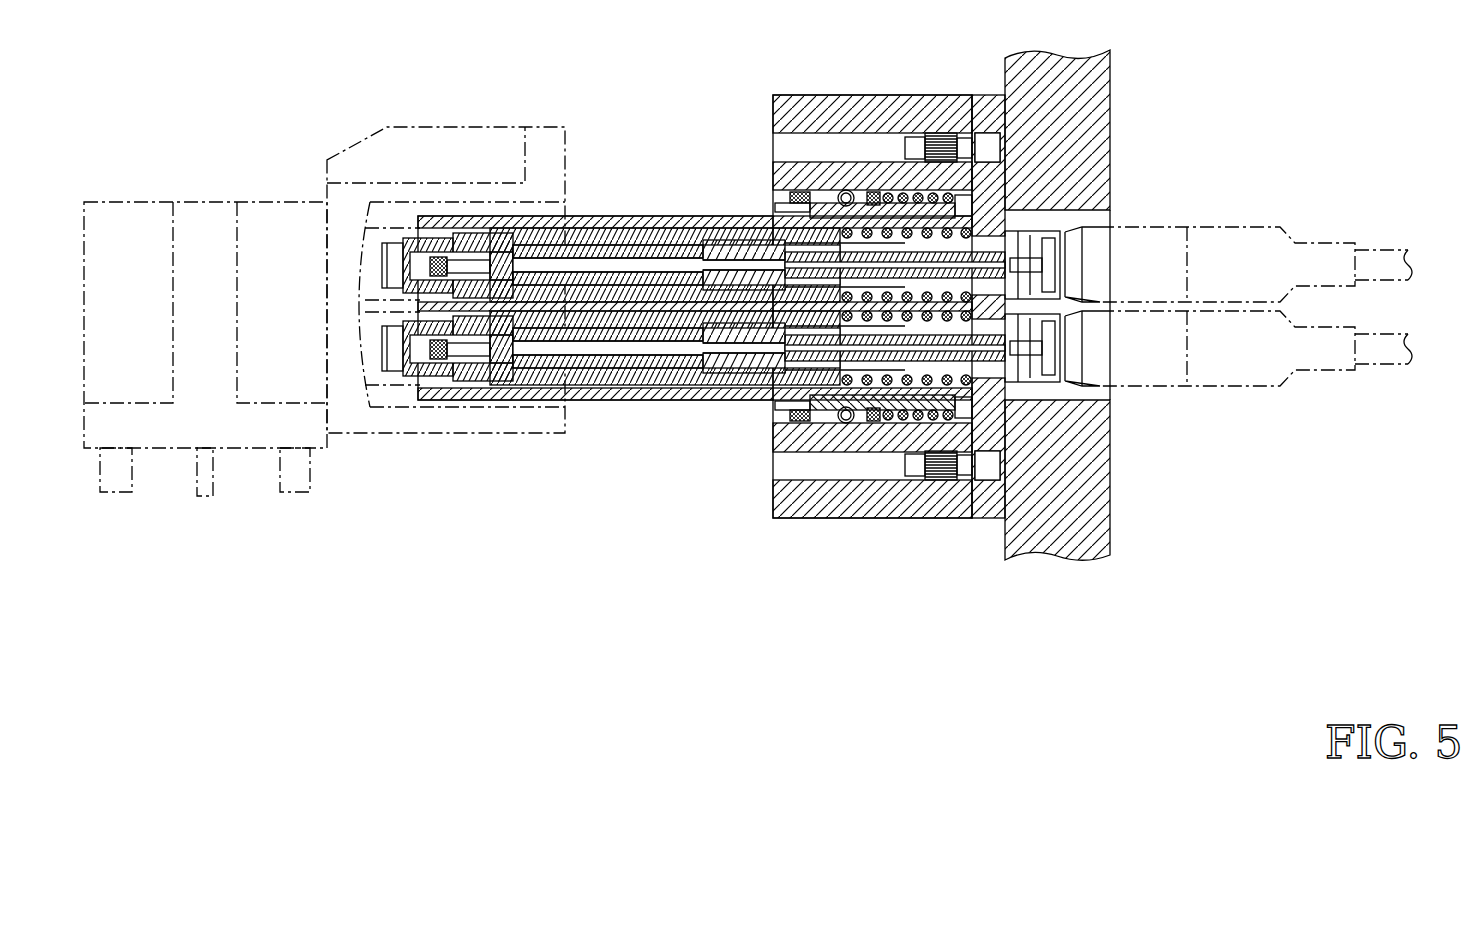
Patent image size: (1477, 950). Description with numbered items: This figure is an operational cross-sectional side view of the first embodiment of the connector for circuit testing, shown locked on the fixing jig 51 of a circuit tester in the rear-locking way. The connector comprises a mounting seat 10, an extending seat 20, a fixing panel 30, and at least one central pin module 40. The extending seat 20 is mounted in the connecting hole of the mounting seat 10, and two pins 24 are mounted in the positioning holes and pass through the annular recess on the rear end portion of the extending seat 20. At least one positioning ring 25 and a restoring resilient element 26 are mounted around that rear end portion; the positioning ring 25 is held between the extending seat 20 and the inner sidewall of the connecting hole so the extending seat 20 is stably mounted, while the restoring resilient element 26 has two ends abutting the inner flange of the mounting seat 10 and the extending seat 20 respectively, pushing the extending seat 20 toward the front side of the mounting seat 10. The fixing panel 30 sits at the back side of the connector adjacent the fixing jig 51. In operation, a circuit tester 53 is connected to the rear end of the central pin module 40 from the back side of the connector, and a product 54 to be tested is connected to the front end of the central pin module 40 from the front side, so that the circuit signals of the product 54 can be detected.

The mounting seat 10 is at (832, 108).
The extending seat 20 is at (677, 214).
The pin 24 is at (840, 422).
The positioning ring 25 is at (788, 416).
The restoring resilient element 26 is at (893, 422).
The fixing panel 30 is at (988, 98).
The central pin module 40 is at (636, 352).
The fixing jig 51 is at (1048, 532).
The circuit tester 53 is at (1240, 258).
The product to be tested 54 is at (207, 232).